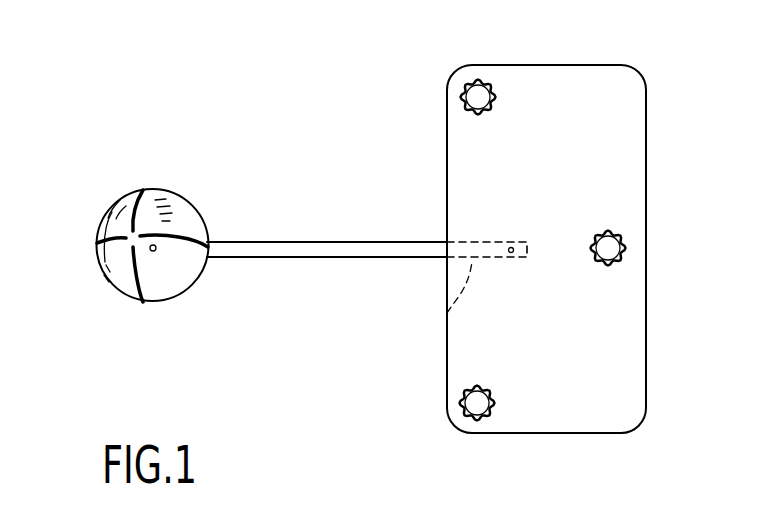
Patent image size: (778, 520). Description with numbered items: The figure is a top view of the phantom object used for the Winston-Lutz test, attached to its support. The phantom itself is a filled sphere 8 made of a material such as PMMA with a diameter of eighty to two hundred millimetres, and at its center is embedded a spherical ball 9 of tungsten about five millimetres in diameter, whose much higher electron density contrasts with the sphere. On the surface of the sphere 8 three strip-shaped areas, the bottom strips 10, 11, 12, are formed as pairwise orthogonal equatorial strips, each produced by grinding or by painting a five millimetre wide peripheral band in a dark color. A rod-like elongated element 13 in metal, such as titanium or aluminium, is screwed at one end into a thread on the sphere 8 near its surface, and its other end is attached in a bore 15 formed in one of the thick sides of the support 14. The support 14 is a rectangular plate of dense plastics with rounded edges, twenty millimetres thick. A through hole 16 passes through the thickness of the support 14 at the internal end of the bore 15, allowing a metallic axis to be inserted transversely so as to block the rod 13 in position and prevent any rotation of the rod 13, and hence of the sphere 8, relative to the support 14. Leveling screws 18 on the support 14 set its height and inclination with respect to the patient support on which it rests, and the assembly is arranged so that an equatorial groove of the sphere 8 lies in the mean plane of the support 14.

The filled sphere 8 is at (196, 198).
The spherical ball 9 is at (157, 250).
The bottom strip 10 is at (98, 242).
The bottom strip 11 is at (100, 275).
The bottom strip 12 is at (137, 304).
The rod-like elongated element 13 is at (325, 242).
The support 14 is at (583, 125).
The bore 15 is at (447, 313).
The through hole 16 is at (511, 247).
The leveling screws 18 is at (480, 93).